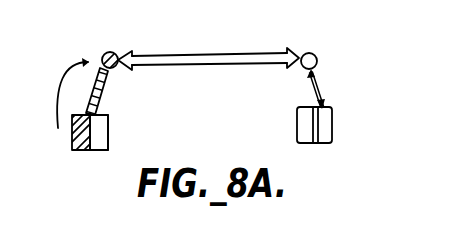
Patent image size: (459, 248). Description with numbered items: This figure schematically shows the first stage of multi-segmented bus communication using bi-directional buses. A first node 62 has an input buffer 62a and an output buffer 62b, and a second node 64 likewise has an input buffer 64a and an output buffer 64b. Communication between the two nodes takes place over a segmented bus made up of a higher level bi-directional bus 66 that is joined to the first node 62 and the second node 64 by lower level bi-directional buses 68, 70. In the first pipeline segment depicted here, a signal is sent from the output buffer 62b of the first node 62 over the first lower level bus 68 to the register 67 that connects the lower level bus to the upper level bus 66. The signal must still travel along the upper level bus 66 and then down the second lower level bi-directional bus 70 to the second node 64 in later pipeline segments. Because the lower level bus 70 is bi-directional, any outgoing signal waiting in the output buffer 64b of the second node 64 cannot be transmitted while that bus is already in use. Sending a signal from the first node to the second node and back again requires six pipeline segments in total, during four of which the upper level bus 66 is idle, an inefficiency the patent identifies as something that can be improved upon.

The first node 62 is at (92, 150).
The input buffer 62a is at (92, 150).
The output buffer 62b is at (82, 150).
The second node 64 is at (311, 142).
The input buffer 64a is at (297, 128).
The output buffer 64b is at (322, 143).
The higher level bi-directional bus 66 is at (190, 53).
The register 67 is at (108, 52).
The lower level bi-directional bus 68 is at (100, 90).
The lower level bi-directional bus 70 is at (321, 88).